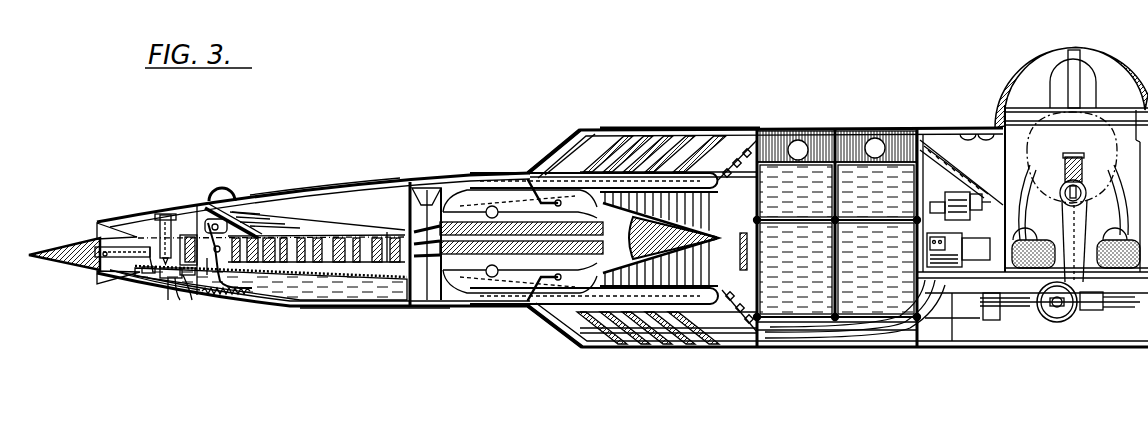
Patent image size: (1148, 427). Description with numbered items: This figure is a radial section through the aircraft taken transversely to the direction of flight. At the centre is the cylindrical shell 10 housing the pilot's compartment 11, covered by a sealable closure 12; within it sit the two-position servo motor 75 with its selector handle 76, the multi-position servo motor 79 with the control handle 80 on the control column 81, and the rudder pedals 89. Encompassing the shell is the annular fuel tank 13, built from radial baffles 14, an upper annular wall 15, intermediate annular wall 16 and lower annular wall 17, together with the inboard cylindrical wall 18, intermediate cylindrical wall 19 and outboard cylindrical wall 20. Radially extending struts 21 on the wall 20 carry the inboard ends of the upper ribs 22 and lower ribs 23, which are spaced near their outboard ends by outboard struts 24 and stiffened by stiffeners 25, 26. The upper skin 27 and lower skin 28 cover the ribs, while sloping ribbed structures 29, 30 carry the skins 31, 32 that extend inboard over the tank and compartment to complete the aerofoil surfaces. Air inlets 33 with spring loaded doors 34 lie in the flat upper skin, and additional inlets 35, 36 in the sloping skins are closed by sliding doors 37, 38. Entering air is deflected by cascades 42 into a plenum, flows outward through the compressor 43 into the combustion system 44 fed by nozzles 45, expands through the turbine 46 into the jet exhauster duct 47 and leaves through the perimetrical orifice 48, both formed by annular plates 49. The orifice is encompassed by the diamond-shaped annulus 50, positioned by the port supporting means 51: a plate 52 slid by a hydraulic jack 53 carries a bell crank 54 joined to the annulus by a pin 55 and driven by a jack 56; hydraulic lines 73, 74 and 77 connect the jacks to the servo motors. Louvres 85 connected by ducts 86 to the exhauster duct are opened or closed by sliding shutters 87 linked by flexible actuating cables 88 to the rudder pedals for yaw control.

The central cylindrical shell 10 is at (935, 122).
The pilot's compartment 11 is at (1013, 145).
The sealable closure 12 is at (1010, 80).
The annular fuel tank 13 is at (812, 124).
The radial baffles 14 is at (857, 127).
The upper annular wall 15 is at (883, 127).
The intermediate annular wall 16 is at (804, 218).
The lower annular wall 17 is at (796, 316).
The inboard cylindrical wall 18 is at (915, 290).
The intermediate cylindrical wall 19 is at (843, 190).
The outboard cylindrical wall 20 is at (764, 250).
The radially extending struts 21 is at (678, 238).
The upper ribs 22 is at (643, 182).
The lower ribs 23 is at (141, 233).
The outboard struts 24 is at (387, 230).
The stiffener 25 is at (427, 190).
The stiffener 26 is at (438, 283).
The upper skin 27 is at (348, 185).
The lower skin 28 is at (373, 310).
The sloping ribbed structure 29 is at (574, 136).
The sloping ribbed structure 30 is at (622, 314).
The upper skin 31 is at (718, 126).
The lower skin 32 is at (927, 300).
The air inlets 33 is at (609, 132).
The spring loaded doors 34 is at (626, 130).
The air inlet 35 is at (703, 150).
The air inlet 36 is at (723, 328).
The sliding door 37 is at (558, 172).
The sliding door 38 is at (550, 328).
The cascades 42 is at (740, 162).
The double-sided multi-stage compressor 43 is at (672, 203).
The combustion system 44 is at (477, 210).
The nozzles 45 is at (528, 180).
The single-stage radial flow turbine 46 is at (466, 272).
The jet exhauster duct 47 is at (342, 262).
The perimetrical orifice 48 is at (97, 277).
The annular plates 49 is at (337, 222).
The annulus 50 is at (77, 236).
The port supporting means 51 is at (143, 290).
The plate 52 is at (190, 233).
The hydraulic jack 53 is at (163, 212).
The bell crank 54 is at (117, 222).
The pin 55 is at (98, 260).
The jack 56 is at (168, 275).
The hydraulic line 73 is at (179, 227).
The hydraulic line 74 is at (988, 210).
The two-position servo motor 75 is at (960, 192).
The selector handle 76 is at (988, 187).
The hydraulic line 77 is at (1067, 305).
The multi-position servo motor 79 is at (1043, 315).
The control handle 80 is at (1067, 163).
The control column 81 is at (1081, 198).
The louvres 85 is at (225, 186).
The ducts 86 is at (253, 228).
The sliding shutters 87 is at (230, 222).
The flexible actuating cables 88 is at (352, 293).
The rudder pedals 89 is at (1127, 213).